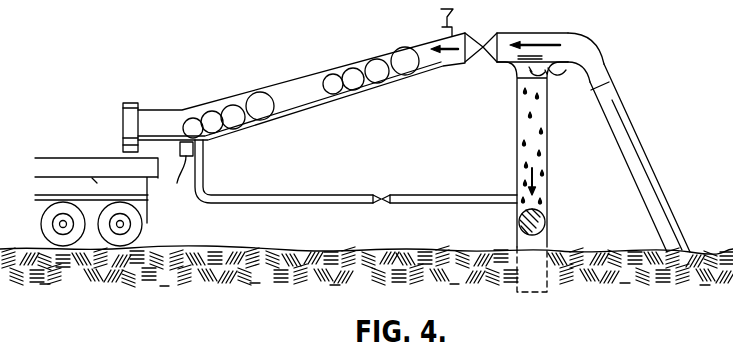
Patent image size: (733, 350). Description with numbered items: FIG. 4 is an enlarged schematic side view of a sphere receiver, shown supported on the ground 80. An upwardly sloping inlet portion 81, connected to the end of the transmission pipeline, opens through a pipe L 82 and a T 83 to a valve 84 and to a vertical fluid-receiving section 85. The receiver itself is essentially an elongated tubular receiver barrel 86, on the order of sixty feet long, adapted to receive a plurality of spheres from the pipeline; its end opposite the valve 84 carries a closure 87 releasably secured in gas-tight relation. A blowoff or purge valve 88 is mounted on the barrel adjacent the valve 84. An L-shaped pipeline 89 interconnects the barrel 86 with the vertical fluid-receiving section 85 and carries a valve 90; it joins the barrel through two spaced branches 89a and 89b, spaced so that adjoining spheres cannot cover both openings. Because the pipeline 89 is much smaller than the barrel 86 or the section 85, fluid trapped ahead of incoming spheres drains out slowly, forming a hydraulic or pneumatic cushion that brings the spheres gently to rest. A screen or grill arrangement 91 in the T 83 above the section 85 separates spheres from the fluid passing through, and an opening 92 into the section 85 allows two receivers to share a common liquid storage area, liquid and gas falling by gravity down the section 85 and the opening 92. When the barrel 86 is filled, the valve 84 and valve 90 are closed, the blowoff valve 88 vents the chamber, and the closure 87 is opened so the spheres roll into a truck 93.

The ground 80 is at (242, 250).
The inlet portion 81 is at (643, 136).
The pipe L 82 is at (607, 62).
The T 83 is at (544, 33).
The valve 84 is at (483, 50).
The vertical fluid-receiving section 85 is at (548, 156).
The receiver barrel 86 is at (270, 84).
The closure 87 is at (127, 103).
The blowoff valve 88 is at (440, 18).
The L-shaped pipeline 89 is at (288, 194).
The branch 89a is at (205, 148).
The branch 89b is at (185, 172).
The valve 90 is at (383, 194).
The screen or grill arrangement 91 is at (552, 76).
The opening 92 is at (545, 220).
The truck 93 is at (150, 211).